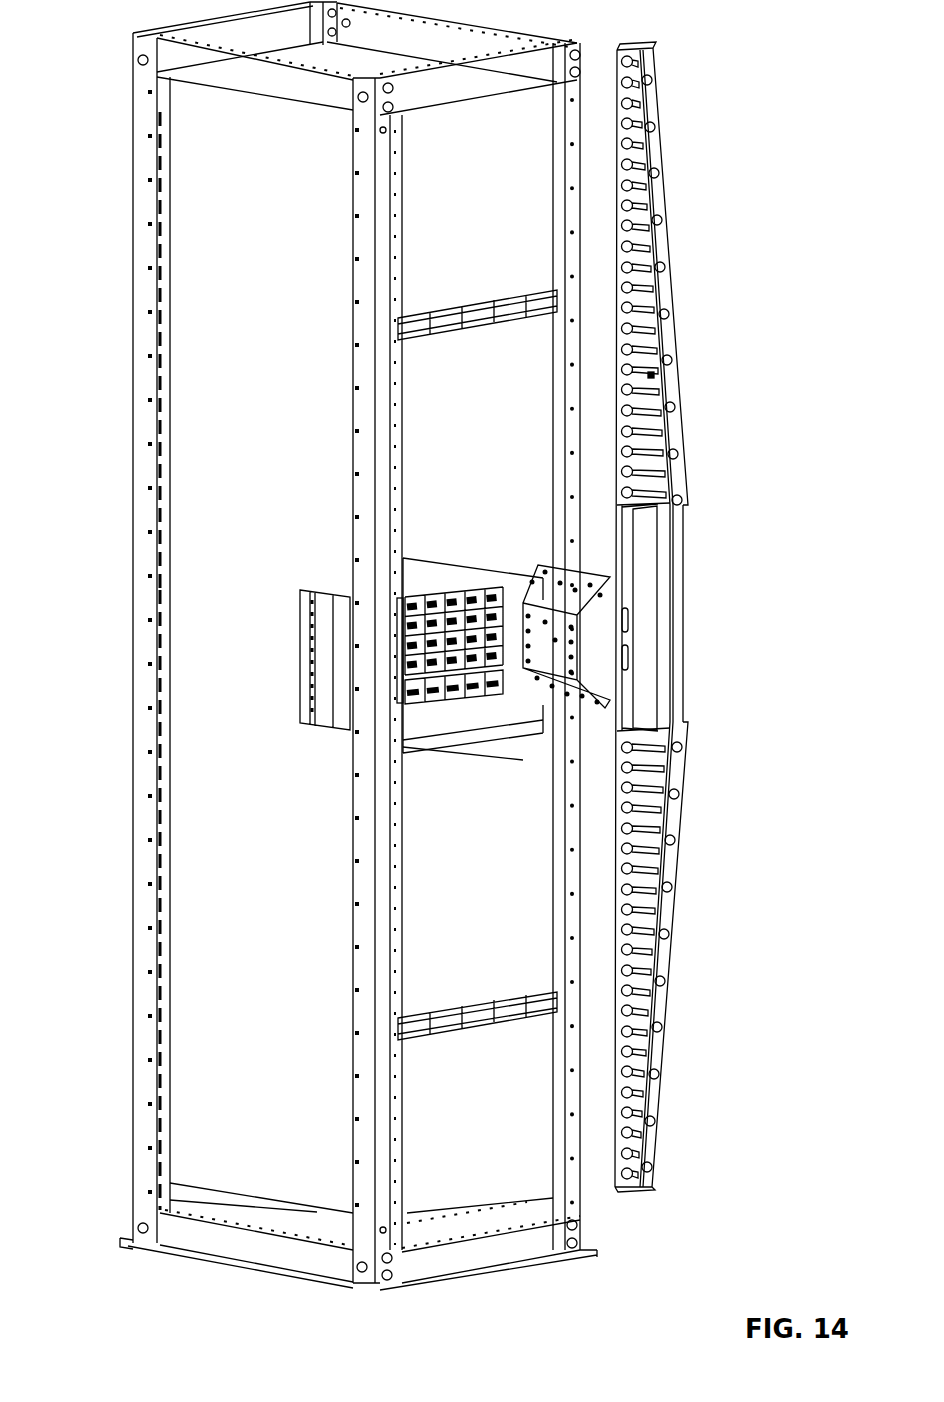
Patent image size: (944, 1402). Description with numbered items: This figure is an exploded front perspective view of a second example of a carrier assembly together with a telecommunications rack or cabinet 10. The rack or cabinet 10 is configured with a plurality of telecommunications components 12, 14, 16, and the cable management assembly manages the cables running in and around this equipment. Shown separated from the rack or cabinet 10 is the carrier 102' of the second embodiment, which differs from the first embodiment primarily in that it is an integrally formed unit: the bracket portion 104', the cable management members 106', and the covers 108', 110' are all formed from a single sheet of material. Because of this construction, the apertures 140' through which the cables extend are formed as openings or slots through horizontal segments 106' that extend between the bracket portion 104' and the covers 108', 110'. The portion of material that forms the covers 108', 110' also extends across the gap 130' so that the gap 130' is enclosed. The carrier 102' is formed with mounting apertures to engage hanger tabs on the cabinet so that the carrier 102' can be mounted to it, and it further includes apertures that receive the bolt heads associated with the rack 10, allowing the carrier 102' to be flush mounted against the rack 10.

The telecommunications rack or cabinet 10 is at (135, 100).
The telecommunications component 12 is at (403, 660).
The telecommunications component 14 is at (197, 205).
The telecommunications component 16 is at (197, 805).
The carrier 102' is at (708, 617).
The bracket portion 104' is at (699, 617).
The cable management members 106' is at (712, 617).
The cover 108' is at (705, 276).
The cover 110' is at (707, 954).
The gap 130' is at (701, 618).
The apertures 140' is at (706, 618).